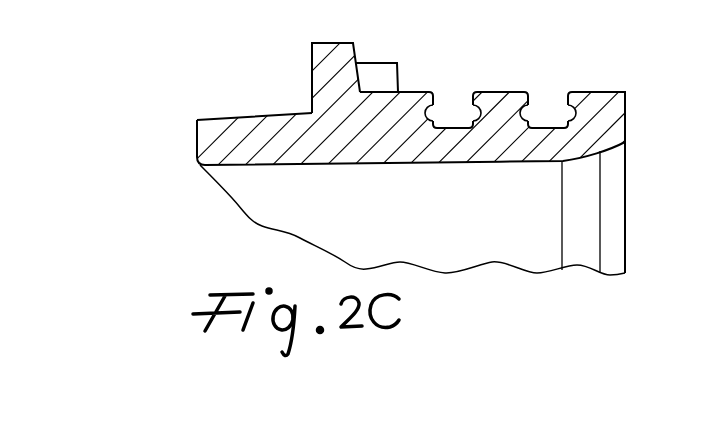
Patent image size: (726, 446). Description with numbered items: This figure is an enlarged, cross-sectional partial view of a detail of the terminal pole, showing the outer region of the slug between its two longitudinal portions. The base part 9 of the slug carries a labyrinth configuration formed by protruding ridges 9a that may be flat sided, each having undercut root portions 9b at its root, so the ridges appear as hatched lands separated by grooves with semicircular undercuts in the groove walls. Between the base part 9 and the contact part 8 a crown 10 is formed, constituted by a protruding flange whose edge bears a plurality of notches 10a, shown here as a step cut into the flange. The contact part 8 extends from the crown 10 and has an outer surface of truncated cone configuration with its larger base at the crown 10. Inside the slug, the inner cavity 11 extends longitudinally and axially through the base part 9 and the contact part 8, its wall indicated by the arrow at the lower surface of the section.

The contact part 8 is at (222, 135).
The crown 10 is at (328, 70).
The notches 10a is at (377, 78).
The base part 9 is at (497, 115).
The protruding ridges 9a is at (593, 103).
The undercut root portions 9b is at (523, 118).
The inner cavity 11 is at (536, 167).